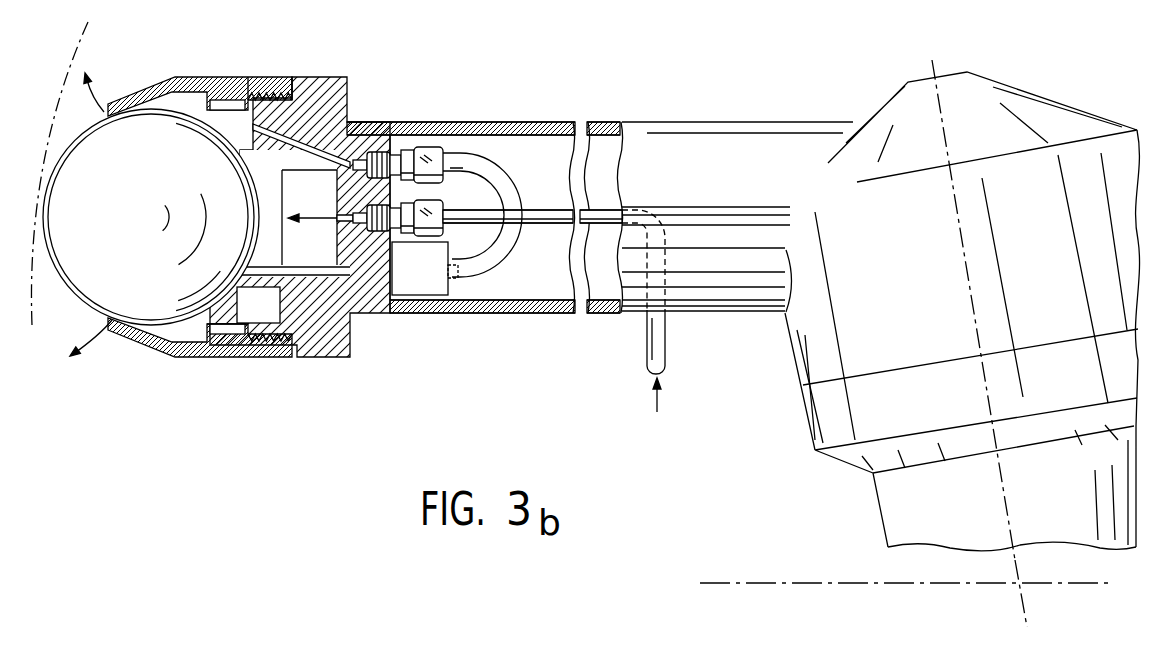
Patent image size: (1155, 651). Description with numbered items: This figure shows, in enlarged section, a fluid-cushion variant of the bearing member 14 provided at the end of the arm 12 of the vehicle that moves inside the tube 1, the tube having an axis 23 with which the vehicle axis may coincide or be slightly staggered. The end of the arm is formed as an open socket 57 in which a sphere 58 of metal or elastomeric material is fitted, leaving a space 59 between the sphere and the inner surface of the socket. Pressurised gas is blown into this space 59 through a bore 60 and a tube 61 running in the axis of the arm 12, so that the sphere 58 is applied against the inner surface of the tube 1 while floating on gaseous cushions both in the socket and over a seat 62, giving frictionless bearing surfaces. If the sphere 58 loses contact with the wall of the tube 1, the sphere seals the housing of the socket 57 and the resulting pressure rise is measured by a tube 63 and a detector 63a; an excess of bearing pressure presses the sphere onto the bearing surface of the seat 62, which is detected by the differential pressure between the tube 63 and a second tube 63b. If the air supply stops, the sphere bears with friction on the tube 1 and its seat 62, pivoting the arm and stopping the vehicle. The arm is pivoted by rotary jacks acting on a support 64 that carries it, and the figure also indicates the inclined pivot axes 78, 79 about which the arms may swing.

The tube 1 is at (82, 46).
The arm 12 is at (467, 123).
The bearing member 14 is at (160, 363).
The axis of tube 23 is at (866, 583).
The open socket 57 is at (227, 88).
The sphere 58 is at (141, 226).
The space 59 is at (186, 104).
The bore 60 is at (357, 222).
The tube 61 is at (652, 355).
The seat 62 is at (235, 283).
The tube 63 is at (304, 132).
The detector 63a is at (434, 282).
The tube 63b is at (322, 280).
The support 64 is at (1114, 162).
The pivot axis 78 is at (1019, 612).
The pivot axis 79 is at (932, 68).